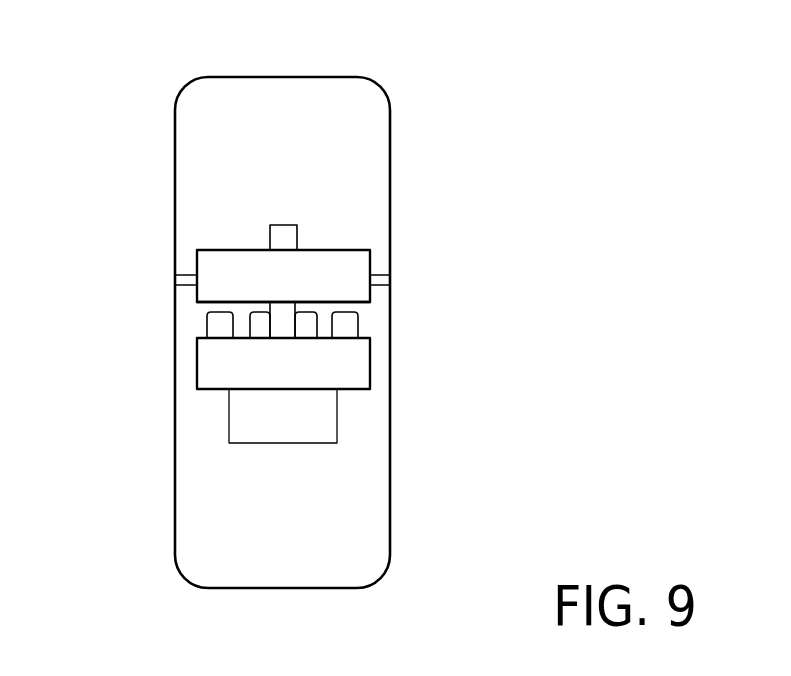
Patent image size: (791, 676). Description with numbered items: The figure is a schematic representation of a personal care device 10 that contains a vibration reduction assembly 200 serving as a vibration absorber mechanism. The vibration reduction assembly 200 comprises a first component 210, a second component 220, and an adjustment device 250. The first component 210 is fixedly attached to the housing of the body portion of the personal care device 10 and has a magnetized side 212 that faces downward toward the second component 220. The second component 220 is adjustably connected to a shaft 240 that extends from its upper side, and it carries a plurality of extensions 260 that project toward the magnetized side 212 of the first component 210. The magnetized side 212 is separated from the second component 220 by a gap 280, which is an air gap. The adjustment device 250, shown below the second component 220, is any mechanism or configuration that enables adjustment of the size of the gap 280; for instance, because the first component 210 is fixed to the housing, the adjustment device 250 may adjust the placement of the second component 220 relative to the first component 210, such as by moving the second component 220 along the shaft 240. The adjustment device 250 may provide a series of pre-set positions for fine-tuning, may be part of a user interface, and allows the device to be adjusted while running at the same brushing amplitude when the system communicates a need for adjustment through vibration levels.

The personal care device 10 is at (115, 160).
The vibration reduction assembly 200 is at (292, 215).
The first component 210 is at (212, 262).
The magnetized side 212 is at (352, 300).
The second component 220 is at (358, 369).
The shaft 240 is at (282, 237).
The adjustment device 250 is at (332, 419).
The extensions 260 is at (350, 325).
The gap 280 is at (207, 308).